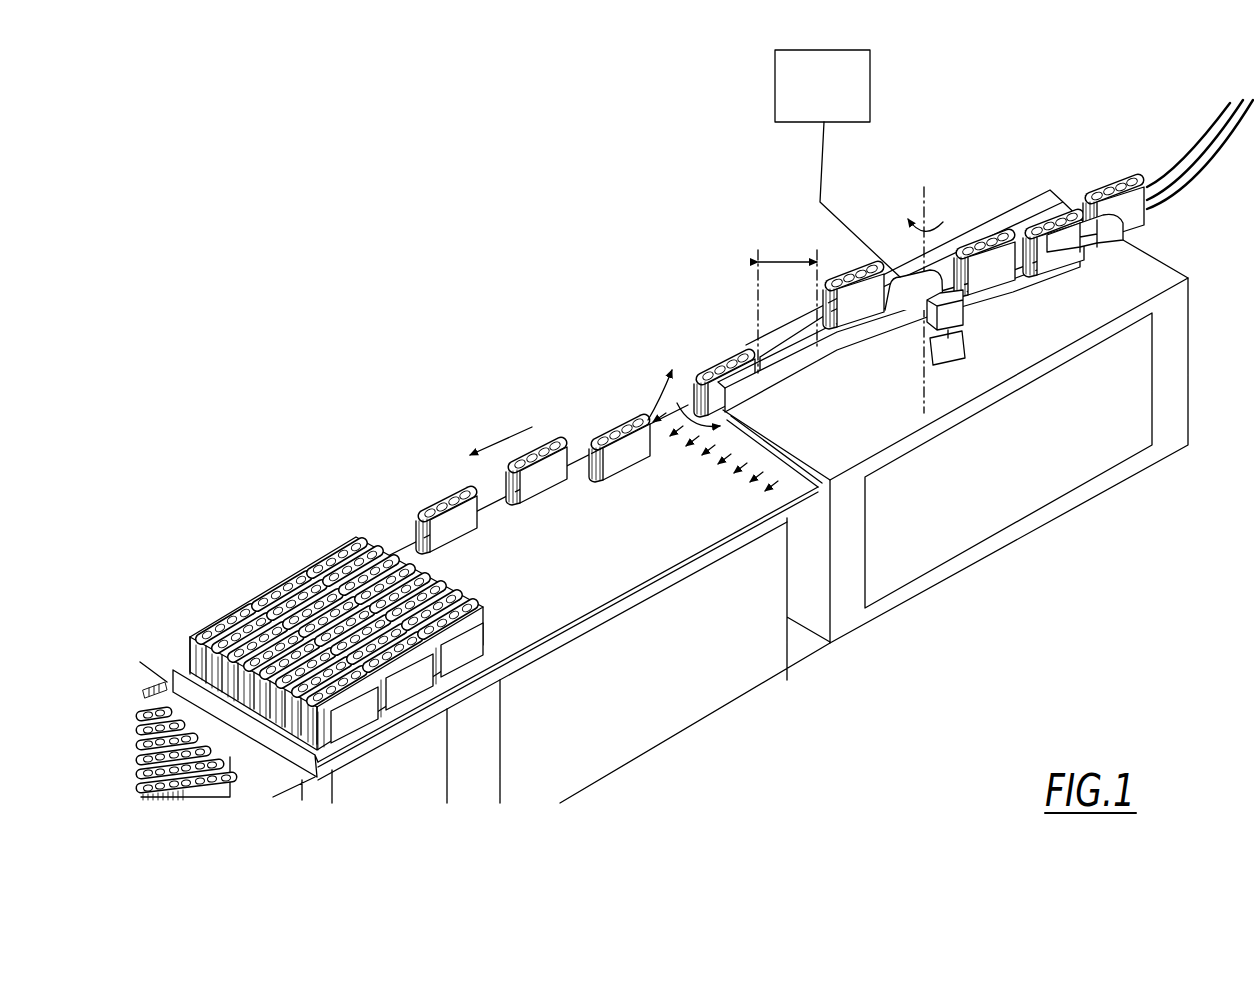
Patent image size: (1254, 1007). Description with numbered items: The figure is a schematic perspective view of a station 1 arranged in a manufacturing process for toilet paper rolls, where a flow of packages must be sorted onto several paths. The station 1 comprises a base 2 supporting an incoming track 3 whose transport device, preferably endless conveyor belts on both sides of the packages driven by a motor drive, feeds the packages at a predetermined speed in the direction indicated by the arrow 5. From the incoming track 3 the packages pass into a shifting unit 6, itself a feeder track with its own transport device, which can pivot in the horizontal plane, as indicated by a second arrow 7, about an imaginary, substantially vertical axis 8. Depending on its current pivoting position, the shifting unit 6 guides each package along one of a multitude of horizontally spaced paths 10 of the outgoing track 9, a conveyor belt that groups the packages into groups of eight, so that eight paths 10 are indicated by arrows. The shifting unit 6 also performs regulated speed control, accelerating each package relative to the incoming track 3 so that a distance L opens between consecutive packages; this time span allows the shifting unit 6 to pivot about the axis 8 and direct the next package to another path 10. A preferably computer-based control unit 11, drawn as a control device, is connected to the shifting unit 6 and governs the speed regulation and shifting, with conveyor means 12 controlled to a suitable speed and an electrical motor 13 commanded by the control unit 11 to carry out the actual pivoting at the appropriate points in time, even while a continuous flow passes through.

The station 1 is at (576, 231).
The base 2 is at (960, 235).
The incoming track 3 is at (1123, 235).
The arrow 5 is at (1092, 269).
The shifting unit 6 is at (862, 347).
The second arrow 7 is at (677, 403).
The imaginary axis 8 is at (920, 205).
The outgoing track 9 is at (585, 595).
The paths 10 is at (703, 486).
The control unit 11 is at (777, 77).
The conveyor means 12 is at (783, 357).
The electrical motor 13 is at (952, 360).